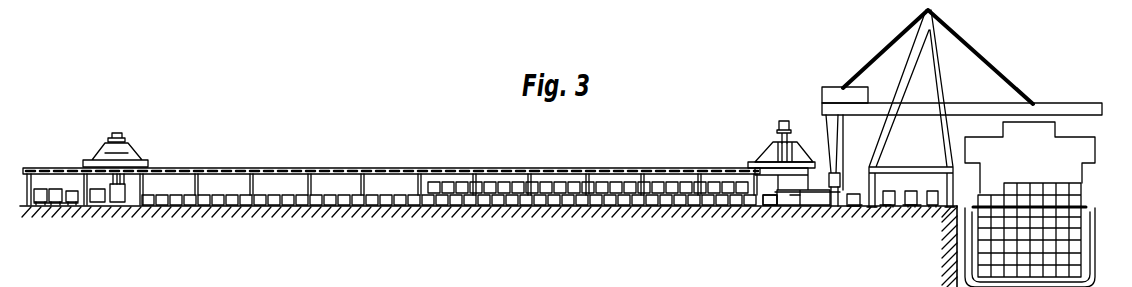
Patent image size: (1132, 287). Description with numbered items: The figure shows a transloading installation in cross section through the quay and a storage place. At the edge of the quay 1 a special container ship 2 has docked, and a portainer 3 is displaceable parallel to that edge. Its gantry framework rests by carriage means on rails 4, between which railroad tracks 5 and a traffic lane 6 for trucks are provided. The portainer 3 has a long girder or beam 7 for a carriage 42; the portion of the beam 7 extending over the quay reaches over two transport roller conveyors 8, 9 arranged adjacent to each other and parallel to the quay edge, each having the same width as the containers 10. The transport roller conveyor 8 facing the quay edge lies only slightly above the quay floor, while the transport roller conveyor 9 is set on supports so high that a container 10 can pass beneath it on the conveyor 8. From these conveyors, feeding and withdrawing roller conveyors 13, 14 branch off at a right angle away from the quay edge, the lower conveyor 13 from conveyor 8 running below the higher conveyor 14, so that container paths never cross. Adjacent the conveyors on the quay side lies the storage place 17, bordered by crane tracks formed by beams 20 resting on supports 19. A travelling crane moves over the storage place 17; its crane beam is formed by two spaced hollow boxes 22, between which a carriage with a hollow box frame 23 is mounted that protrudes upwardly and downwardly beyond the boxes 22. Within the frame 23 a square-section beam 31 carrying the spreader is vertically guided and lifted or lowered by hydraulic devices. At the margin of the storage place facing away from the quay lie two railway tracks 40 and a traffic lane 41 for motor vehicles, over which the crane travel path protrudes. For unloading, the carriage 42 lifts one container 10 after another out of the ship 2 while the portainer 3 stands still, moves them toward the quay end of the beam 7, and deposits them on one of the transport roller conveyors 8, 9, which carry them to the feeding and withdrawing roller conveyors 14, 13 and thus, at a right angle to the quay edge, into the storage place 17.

The quay 1 is at (947, 250).
The container ship 2 is at (1088, 213).
The portainer 3 is at (875, 53).
The rails 4 is at (872, 210).
The railroad tracks 5 is at (920, 210).
The traffic lane 6 is at (885, 209).
The girder or beam 7 is at (967, 109).
The transport roller conveyor 8 is at (855, 208).
The transport roller conveyor 9 is at (830, 208).
The containers 10 is at (97, 191).
The feeding and withdrawing roller conveyor 13 is at (796, 208).
The feeding and withdrawing roller conveyor 14 is at (778, 198).
The storage place 17 is at (531, 210).
The supports 19 is at (251, 186).
The beams 20 is at (552, 169).
The hollow boxes 22 is at (792, 157).
The hollow box frame 23 is at (128, 143).
The beam 31 is at (118, 131).
The railway tracks 40 is at (118, 203).
The traffic lane 41 is at (47, 205).
The carriage 42 is at (845, 115).